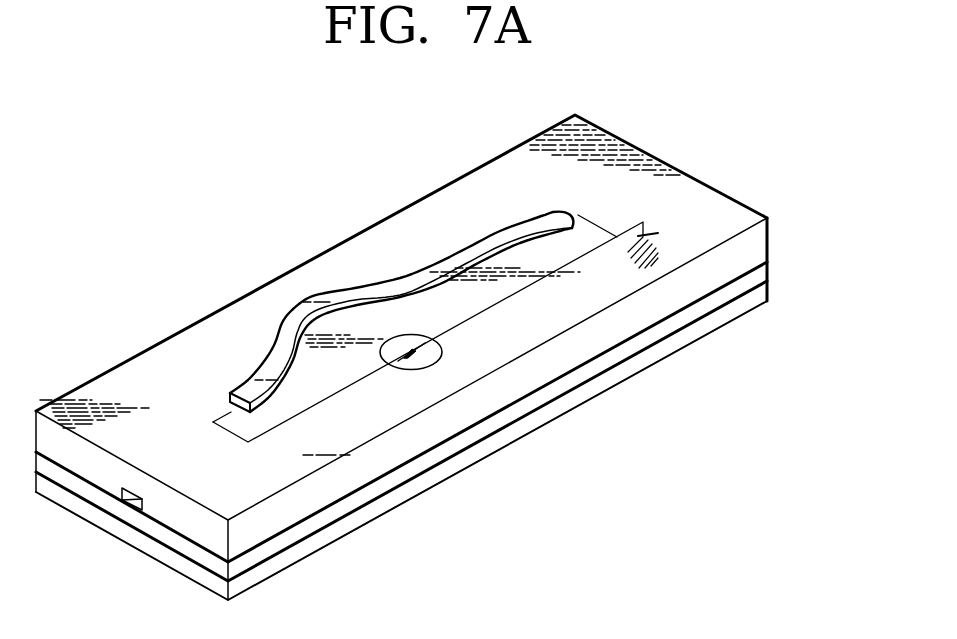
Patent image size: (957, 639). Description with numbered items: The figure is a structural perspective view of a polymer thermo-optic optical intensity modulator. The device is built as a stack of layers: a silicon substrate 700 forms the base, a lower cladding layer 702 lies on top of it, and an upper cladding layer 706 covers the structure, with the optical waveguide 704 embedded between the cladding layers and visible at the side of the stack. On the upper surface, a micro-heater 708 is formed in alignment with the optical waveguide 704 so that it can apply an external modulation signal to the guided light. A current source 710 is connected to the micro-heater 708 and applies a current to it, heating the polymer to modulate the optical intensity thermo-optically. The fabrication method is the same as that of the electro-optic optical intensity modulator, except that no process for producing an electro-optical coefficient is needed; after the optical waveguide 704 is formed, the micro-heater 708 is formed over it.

The silicon substrate 700 is at (717, 320).
The lower cladding layer 702 is at (753, 280).
The optical waveguide 704 is at (130, 495).
The upper cladding layer 706 is at (700, 273).
The micro-heater 708 is at (300, 303).
The current source 710 is at (433, 368).